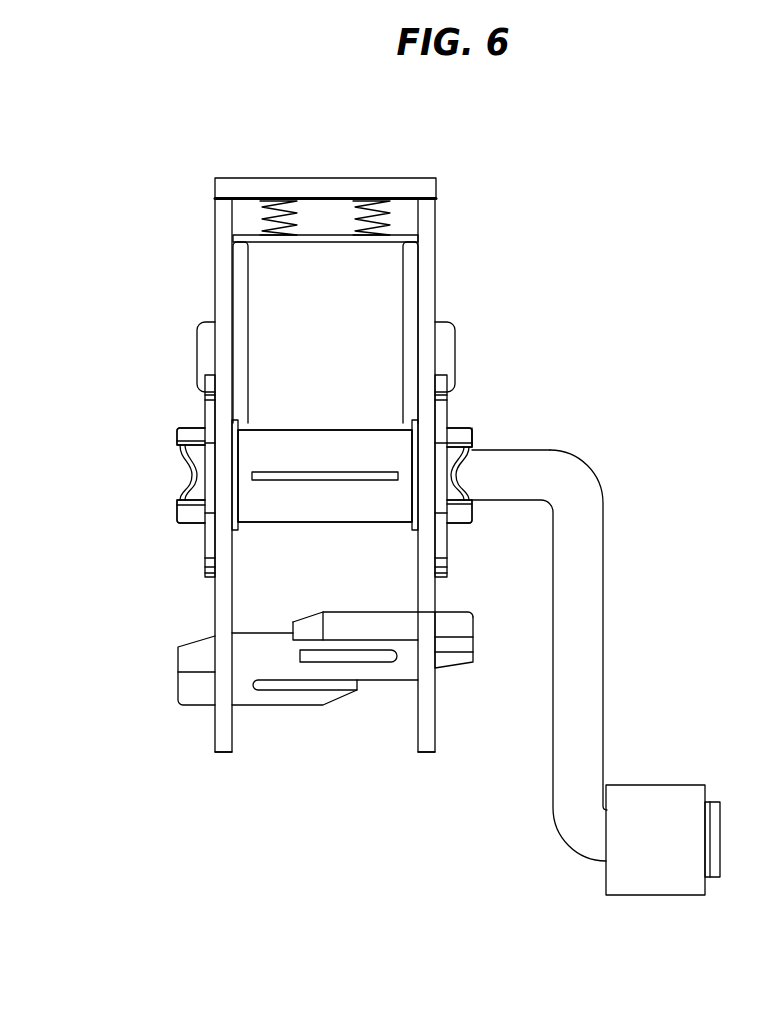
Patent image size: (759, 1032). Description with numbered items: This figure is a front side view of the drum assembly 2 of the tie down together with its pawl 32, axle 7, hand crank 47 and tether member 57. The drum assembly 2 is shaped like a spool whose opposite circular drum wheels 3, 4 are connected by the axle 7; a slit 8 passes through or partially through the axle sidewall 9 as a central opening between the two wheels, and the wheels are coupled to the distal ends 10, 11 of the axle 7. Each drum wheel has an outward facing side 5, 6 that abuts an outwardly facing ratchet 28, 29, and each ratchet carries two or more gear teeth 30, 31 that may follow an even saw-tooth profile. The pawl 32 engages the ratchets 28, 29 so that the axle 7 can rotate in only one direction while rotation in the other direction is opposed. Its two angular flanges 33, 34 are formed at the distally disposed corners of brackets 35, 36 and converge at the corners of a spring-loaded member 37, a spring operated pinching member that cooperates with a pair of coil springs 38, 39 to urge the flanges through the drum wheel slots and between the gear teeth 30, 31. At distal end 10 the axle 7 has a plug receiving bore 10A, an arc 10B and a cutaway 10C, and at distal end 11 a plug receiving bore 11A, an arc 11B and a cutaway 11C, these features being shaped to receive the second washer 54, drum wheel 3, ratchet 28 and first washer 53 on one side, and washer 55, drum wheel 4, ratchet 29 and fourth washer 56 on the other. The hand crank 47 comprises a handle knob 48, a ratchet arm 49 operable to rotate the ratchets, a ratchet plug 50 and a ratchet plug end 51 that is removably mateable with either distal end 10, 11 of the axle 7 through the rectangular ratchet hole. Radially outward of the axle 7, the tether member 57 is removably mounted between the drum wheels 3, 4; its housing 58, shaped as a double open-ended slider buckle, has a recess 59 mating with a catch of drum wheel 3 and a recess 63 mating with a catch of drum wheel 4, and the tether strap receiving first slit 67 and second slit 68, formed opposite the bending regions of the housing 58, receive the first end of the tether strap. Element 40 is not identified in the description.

The drum assembly 2 is at (582, 192).
The drum wheel 3 is at (427, 753).
The drum wheel 4 is at (226, 753).
The outward facing side 5 is at (436, 243).
The outward facing side 6 is at (215, 243).
The axle 7 is at (340, 430).
The slit 8 is at (331, 480).
The axle sidewall 9 is at (323, 465).
The distal end 10 is at (638, 453).
The plug receiving bore 10A is at (460, 473).
The arc 10B is at (467, 478).
The cutaway 10C is at (471, 517).
The distal end 11 is at (150, 490).
The plug receiving bore 11A is at (182, 468).
The arc 11B is at (180, 495).
The cutaway 11C is at (190, 443).
The ratchet 28 is at (447, 403).
The ratchet 29 is at (205, 392).
The gear teeth 30 is at (210, 397).
The gear teeth 31 is at (213, 375).
The pawl 32 is at (435, 132).
The angular flange 33 is at (457, 345).
The angular flange 34 is at (198, 345).
The bracket 35 is at (392, 313).
The bracket 36 is at (262, 313).
The spring-loaded member 37 is at (332, 242).
The coil spring 38 is at (351, 222).
The coil spring 39 is at (300, 222).
The top plate 40 is at (240, 178).
The hand crank 47 is at (510, 885).
The handle knob 48 is at (644, 848).
The ratchet arm 49 is at (603, 660).
The ratchet plug 50 is at (505, 450).
The ratchet plug end 51 is at (476, 446).
The first washer 53 is at (447, 527).
The second washer 54 is at (412, 530).
The washer 55 is at (240, 530).
The fourth washer 56 is at (205, 527).
The tether member 57 is at (328, 776).
The housing 58 is at (474, 647).
The recess 59 is at (436, 672).
The recess 63 is at (213, 705).
The tether strap receiving first slit 67 is at (305, 655).
The tether strap receiving second slit 68 is at (358, 686).